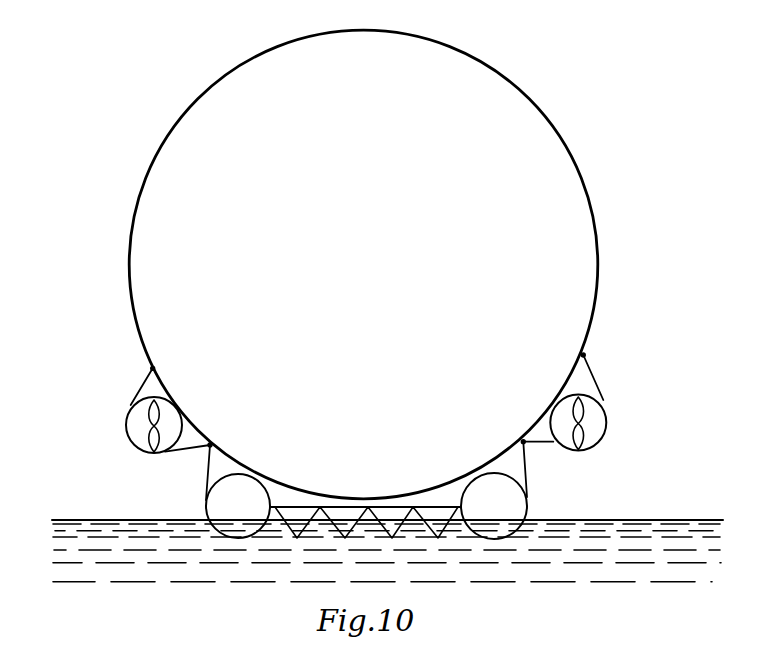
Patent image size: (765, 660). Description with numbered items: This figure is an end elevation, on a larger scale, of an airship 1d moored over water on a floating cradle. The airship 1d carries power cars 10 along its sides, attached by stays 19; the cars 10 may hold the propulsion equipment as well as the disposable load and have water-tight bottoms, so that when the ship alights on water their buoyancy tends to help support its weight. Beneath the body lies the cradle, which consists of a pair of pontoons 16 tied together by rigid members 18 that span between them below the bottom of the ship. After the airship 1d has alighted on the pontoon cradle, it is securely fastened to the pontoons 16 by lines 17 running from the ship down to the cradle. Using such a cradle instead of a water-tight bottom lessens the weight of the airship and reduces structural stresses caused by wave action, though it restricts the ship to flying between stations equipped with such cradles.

The airship 1d is at (363, 264).
The power cars 10 is at (607, 421).
The pontoons 16 is at (366, 506).
The lines 17 is at (204, 475).
The rigid members 18 is at (343, 505).
The stays 19 is at (593, 378).